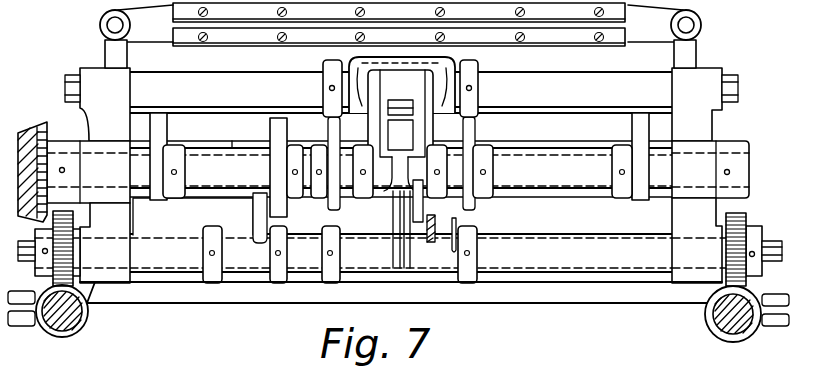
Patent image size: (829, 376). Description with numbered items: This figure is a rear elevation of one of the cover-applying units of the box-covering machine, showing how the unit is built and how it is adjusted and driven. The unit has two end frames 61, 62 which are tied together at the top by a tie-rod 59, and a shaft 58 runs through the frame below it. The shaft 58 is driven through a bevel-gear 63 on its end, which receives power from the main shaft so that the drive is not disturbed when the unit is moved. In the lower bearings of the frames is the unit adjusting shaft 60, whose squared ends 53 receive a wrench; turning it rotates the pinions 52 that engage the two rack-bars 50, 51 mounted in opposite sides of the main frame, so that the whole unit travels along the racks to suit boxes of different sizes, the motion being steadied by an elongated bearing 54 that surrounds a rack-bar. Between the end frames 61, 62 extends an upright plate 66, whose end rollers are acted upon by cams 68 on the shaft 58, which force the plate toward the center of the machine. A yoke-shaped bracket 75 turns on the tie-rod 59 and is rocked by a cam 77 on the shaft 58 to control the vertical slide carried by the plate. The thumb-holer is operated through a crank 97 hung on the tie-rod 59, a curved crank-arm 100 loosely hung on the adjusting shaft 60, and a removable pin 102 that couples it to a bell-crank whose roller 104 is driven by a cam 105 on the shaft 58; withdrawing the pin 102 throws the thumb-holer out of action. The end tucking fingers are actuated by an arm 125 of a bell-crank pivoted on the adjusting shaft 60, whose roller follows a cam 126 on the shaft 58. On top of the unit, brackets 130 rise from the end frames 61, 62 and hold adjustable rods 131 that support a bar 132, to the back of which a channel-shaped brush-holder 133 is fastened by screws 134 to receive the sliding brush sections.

The rack-bar 50 is at (736, 329).
The rack-bar 51 is at (75, 321).
The pinion 52 is at (50, 281).
The squared end 53 is at (33, 240).
The elongated bearing 54 is at (53, 333).
The shaft 58 is at (550, 178).
The tie-rod 59 is at (532, 80).
The unit adjusting shaft 60 is at (401, 253).
The end frame 61 is at (88, 72).
The end frame 62 is at (706, 78).
The bevel-gear 63 is at (33, 120).
The upright plate 66 is at (232, 138).
The cam 68 is at (160, 128).
The yoke-shaped bracket 75 is at (390, 58).
The cam 77 is at (330, 125).
The crank 97 is at (400, 130).
The curved crank-arm 100 is at (340, 254).
The removable pin 102 is at (440, 238).
The roller 104 is at (458, 226).
The cam 105 is at (470, 130).
The arm 125 is at (253, 203).
The cam 126 is at (277, 120).
The bracket 130 is at (108, 34).
The adjustable rod 131 is at (108, 25).
The bar 132 is at (148, 32).
The brush-holder 133 is at (253, 40).
The screw 134 is at (528, 42).